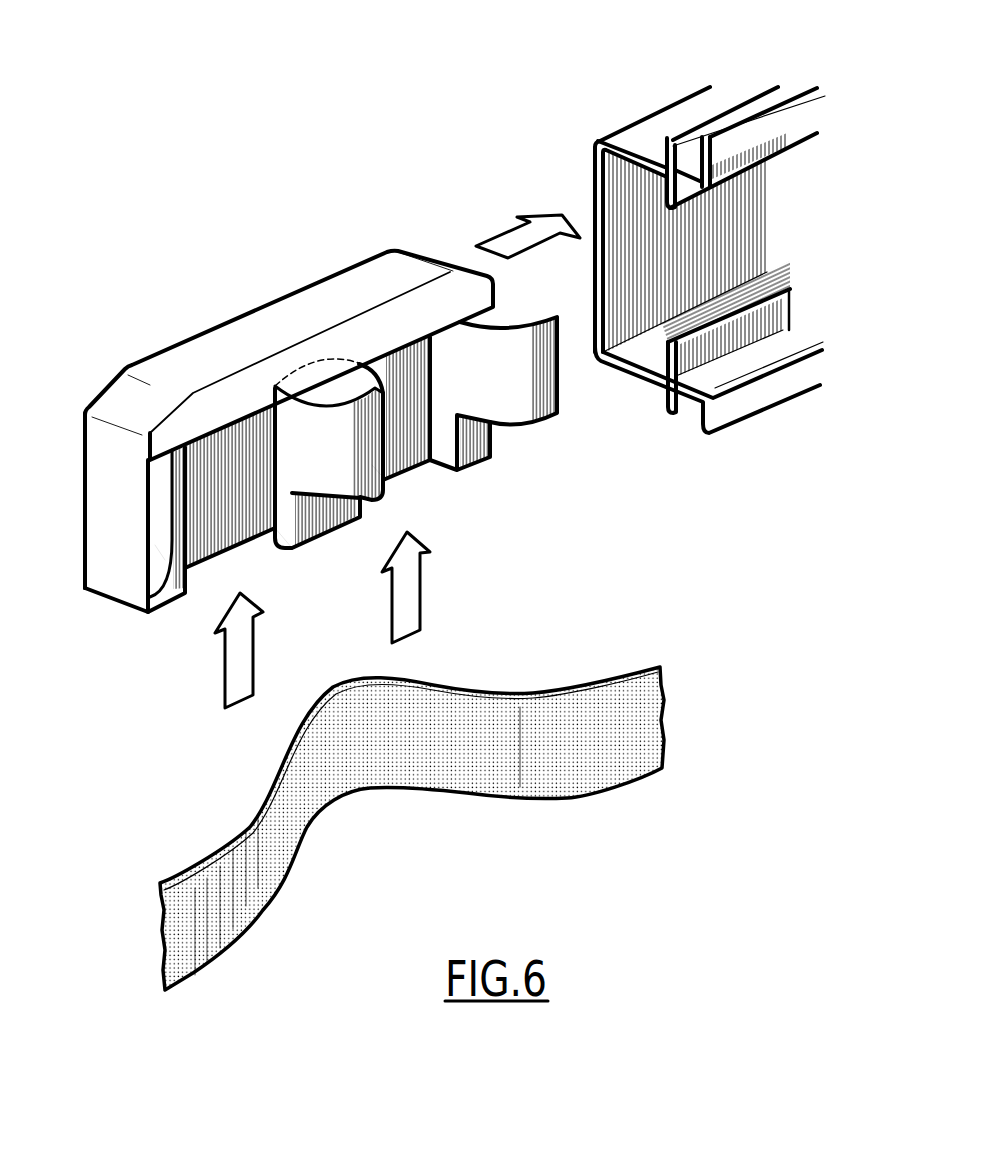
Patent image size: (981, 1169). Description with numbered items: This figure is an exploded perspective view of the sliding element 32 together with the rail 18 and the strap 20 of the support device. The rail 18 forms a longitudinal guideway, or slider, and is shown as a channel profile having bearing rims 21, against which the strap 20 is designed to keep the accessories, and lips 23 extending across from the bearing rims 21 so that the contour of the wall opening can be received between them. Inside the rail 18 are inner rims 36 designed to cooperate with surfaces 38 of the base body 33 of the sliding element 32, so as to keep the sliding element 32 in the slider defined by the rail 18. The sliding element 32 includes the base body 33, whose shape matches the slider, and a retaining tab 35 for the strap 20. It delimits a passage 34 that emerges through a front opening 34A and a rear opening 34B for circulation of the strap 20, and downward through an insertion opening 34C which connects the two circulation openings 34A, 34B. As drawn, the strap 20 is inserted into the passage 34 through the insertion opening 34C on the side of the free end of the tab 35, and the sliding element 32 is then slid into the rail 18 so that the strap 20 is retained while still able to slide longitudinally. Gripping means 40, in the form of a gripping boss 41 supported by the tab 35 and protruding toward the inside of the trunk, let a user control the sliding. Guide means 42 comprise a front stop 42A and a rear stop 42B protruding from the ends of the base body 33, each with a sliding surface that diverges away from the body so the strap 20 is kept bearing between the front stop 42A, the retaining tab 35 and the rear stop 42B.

The rail 18 is at (720, 257).
The strap 20 is at (598, 773).
The bearing rim 21 is at (773, 131).
The lips 23 is at (702, 127).
The sliding element 32 is at (335, 443).
The base body 33 is at (110, 532).
The passage 34 is at (236, 421).
The front opening 34A is at (394, 378).
The rear opening 34B is at (212, 468).
The insertion opening 34C is at (278, 547).
The retaining tab 35 is at (387, 420).
The inner rims 36 is at (753, 318).
The surfaces 38 is at (477, 453).
The gripping means 40 is at (372, 465).
The gripping boss 41 is at (348, 487).
The guide means 42 is at (335, 486).
The front stop 42A is at (548, 413).
The rear stop 42B is at (155, 545).